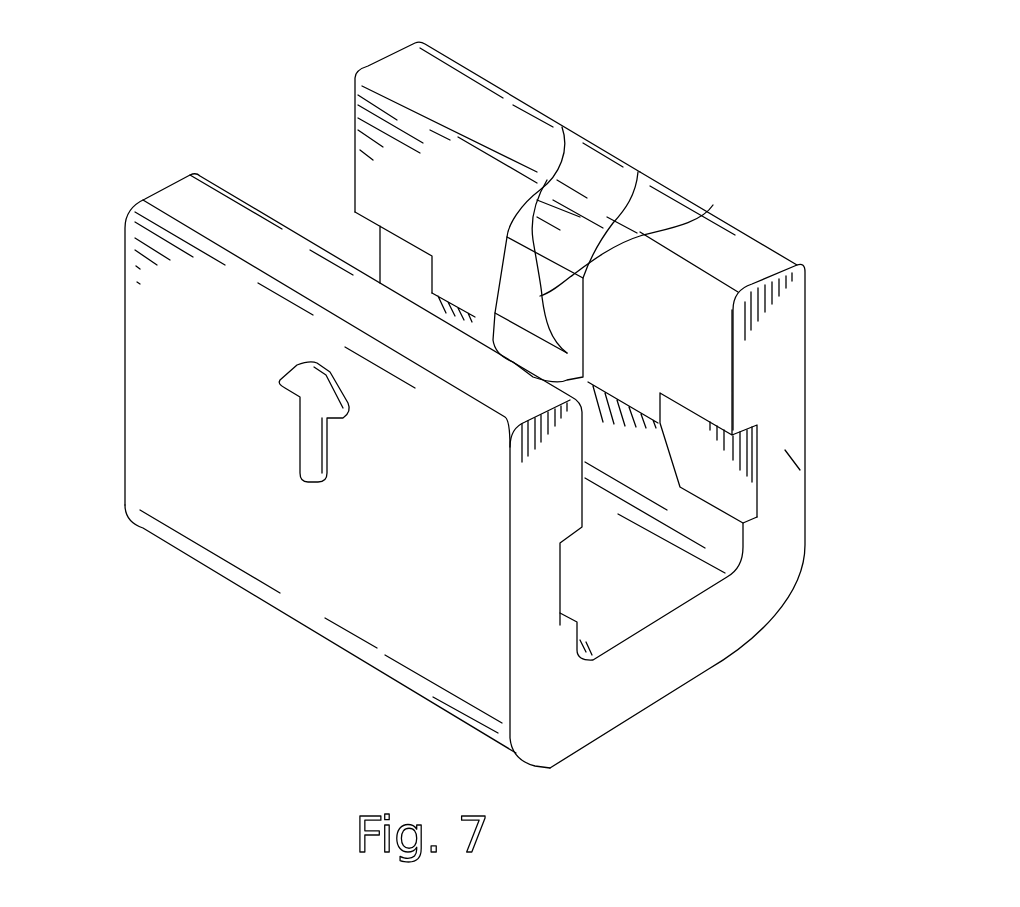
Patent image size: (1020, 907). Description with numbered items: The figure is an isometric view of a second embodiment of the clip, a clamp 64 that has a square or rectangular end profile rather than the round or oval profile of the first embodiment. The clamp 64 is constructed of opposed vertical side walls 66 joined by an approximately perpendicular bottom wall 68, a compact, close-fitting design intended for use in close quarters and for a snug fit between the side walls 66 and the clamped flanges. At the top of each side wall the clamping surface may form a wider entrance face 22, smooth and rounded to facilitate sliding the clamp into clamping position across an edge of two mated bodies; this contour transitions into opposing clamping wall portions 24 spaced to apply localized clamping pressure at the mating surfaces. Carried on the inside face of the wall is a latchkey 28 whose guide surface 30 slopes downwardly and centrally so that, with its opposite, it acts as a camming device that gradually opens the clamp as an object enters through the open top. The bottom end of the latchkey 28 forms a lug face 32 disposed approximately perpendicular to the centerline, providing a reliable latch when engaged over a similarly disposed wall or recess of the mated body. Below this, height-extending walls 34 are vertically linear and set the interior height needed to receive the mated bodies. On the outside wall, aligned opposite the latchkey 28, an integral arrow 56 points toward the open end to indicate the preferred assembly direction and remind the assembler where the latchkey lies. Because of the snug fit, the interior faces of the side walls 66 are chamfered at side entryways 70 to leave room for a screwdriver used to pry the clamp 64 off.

The entrance face 22 is at (580, 242).
The clamping wall portion 24 is at (398, 162).
The latchkey 28 is at (562, 127).
The guide surface 30 is at (638, 170).
The bottom lug face 32 is at (713, 205).
The height-extending wall 34 is at (790, 462).
The arrow 56 is at (310, 448).
The clamp 64 is at (458, 423).
The side wall 66 is at (128, 335).
The bottom wall 68 is at (673, 673).
The side entryway 70 is at (378, 247).